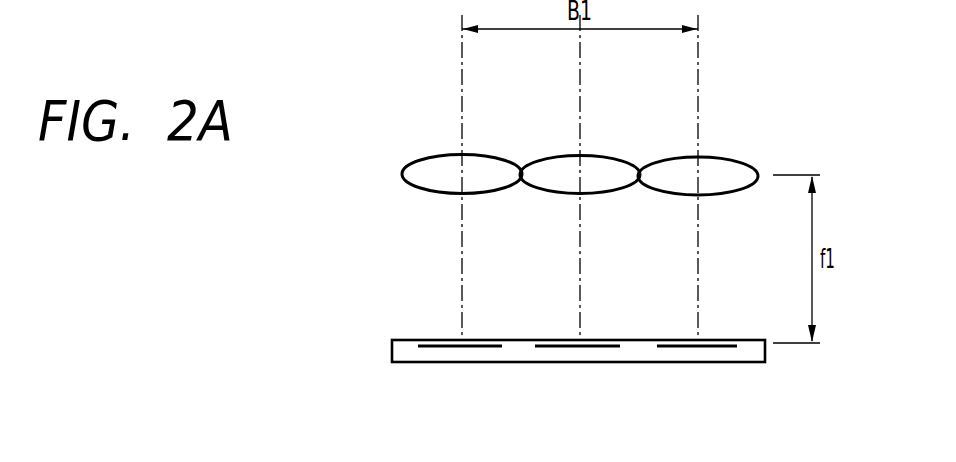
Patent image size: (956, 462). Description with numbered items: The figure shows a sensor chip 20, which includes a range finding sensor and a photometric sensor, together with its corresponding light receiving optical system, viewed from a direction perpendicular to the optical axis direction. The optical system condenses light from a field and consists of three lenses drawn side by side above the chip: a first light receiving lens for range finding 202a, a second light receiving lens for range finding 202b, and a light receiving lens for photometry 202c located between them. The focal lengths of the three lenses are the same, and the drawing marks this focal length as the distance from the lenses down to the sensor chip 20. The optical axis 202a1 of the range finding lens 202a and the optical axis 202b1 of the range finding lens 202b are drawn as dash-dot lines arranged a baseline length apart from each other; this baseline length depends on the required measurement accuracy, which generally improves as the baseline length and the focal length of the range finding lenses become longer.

The sensor chip 20 is at (558, 212).
The light receiving lens for range finding 202a is at (715, 148).
The light receiving lens for range finding 202b is at (481, 149).
The light receiving lens for photometry 202c is at (601, 149).
The optical axis of the light receiving lens for range finding 202a1 is at (698, 98).
The optical axis of the light receiving lens 202b1 is at (462, 96).